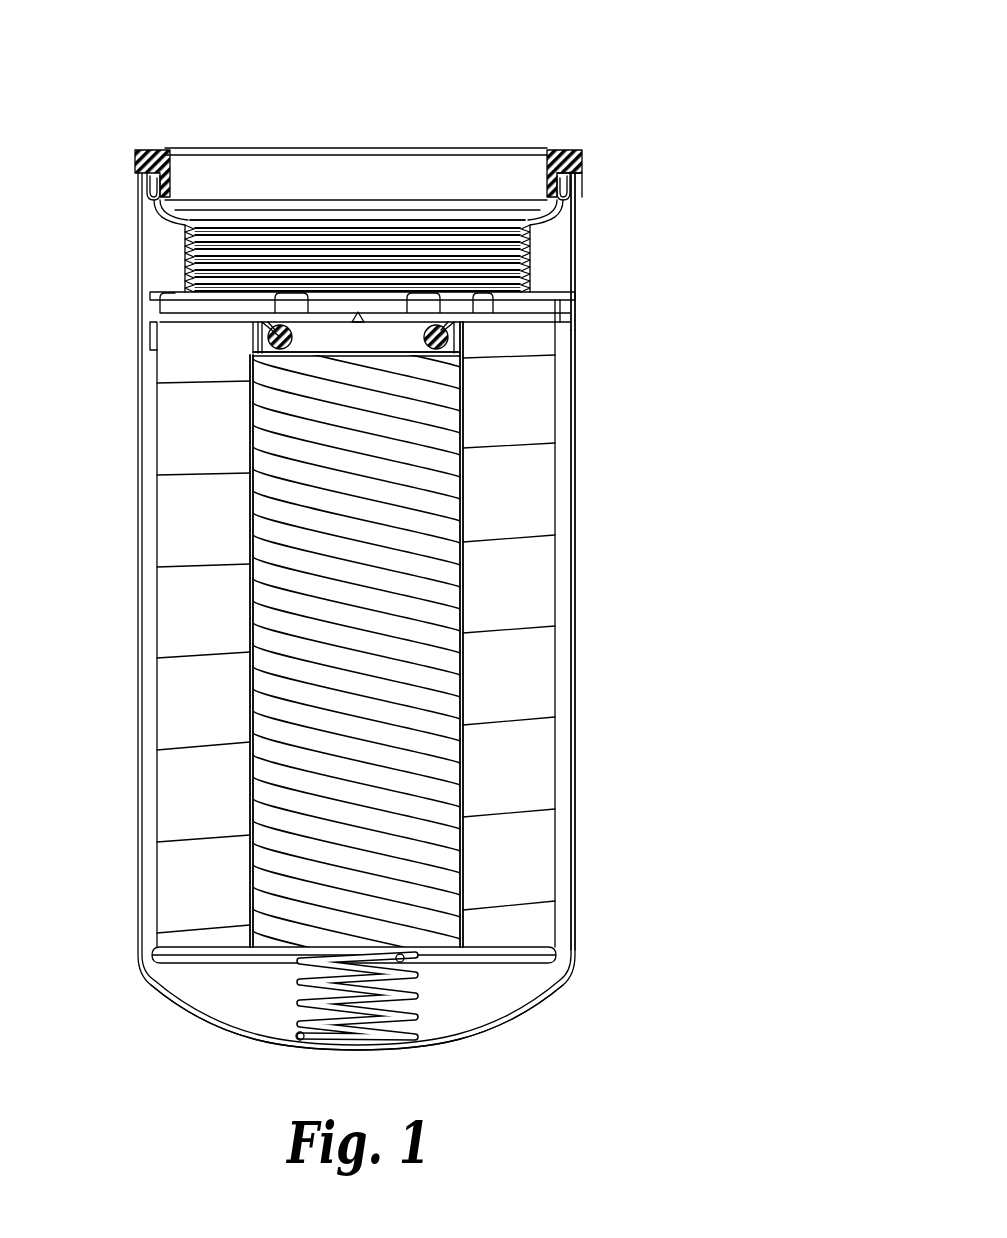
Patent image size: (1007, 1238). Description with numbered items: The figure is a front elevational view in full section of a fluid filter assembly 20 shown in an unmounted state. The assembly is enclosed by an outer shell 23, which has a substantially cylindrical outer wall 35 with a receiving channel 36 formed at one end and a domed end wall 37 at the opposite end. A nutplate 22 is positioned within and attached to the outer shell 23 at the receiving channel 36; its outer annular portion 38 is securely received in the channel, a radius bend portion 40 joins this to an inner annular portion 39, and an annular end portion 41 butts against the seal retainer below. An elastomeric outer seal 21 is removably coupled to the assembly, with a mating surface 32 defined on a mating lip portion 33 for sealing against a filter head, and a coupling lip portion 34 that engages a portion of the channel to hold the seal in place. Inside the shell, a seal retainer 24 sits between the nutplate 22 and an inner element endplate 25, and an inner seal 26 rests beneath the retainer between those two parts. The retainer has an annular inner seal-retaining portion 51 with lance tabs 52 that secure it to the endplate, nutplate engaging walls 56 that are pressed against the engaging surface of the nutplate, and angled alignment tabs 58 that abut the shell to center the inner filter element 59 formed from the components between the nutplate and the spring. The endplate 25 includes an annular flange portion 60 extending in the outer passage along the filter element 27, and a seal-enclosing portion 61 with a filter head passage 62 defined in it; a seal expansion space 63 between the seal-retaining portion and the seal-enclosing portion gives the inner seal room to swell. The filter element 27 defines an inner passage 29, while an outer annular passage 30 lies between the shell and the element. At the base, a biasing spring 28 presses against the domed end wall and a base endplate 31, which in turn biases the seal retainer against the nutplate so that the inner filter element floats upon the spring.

The fluid filter assembly 20 is at (667, 70).
The outer seal 21 is at (140, 150).
The nutplate 22 is at (148, 185).
The outer shell 23 is at (148, 230).
The seal retainer 24 is at (158, 297).
The inner element endplate 25 is at (150, 338).
The inner seal 26 is at (268, 345).
The filter element 27 is at (175, 610).
The biasing spring 28 is at (302, 995).
The inner passage 29 is at (275, 722).
The outer annular passage 30 is at (150, 868).
The base endplate 31 is at (152, 982).
The mating surface 32 is at (566, 150).
The mating lip portion 33 is at (580, 160).
The coupling lip portion 34 is at (566, 220).
The outer wall 35 is at (578, 262).
The receiving channel 36 is at (576, 178).
The domed end wall 37 is at (470, 1040).
The outer annular portion 38 is at (570, 242).
The inner annular portion 39 is at (536, 266).
The radius bend portion 40 is at (520, 215).
The annular end portion 41 is at (530, 300).
The inner seal-retaining portion 51 is at (460, 332).
The lance tabs 52 is at (440, 342).
The nutplate engaging wall 56 is at (540, 340).
The angled alignment tab 58 is at (566, 302).
The inner filter element 59 is at (558, 752).
The annular flange portion 60 is at (152, 352).
The seal-enclosing portion 61 is at (268, 338).
The filter head passage 62 is at (330, 348).
The seal expansion space 63 is at (325, 352).